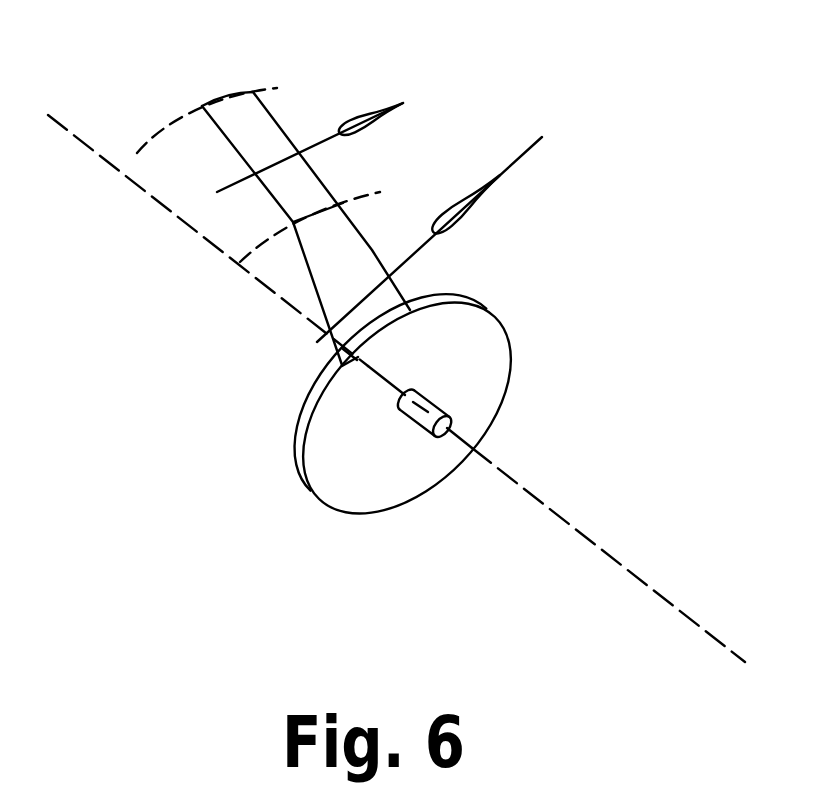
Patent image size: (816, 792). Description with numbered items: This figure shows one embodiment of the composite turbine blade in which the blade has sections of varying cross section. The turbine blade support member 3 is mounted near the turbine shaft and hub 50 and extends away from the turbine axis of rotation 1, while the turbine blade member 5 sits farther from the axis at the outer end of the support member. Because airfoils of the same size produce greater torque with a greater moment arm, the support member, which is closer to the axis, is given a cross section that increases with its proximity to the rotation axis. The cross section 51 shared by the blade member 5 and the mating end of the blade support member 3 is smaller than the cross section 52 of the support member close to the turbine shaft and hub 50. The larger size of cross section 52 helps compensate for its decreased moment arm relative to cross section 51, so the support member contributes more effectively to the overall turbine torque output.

The turbine axis of rotation 1 is at (283, 317).
The turbine blade support member 3 is at (363, 232).
The turbine blade member 5 is at (272, 113).
The turbine shaft and hub 50 is at (482, 360).
The cross section shared by blade member and mating end of blade support member 51 is at (377, 110).
The cross section of blade support member close to turbine shaft and hub 52 is at (463, 223).